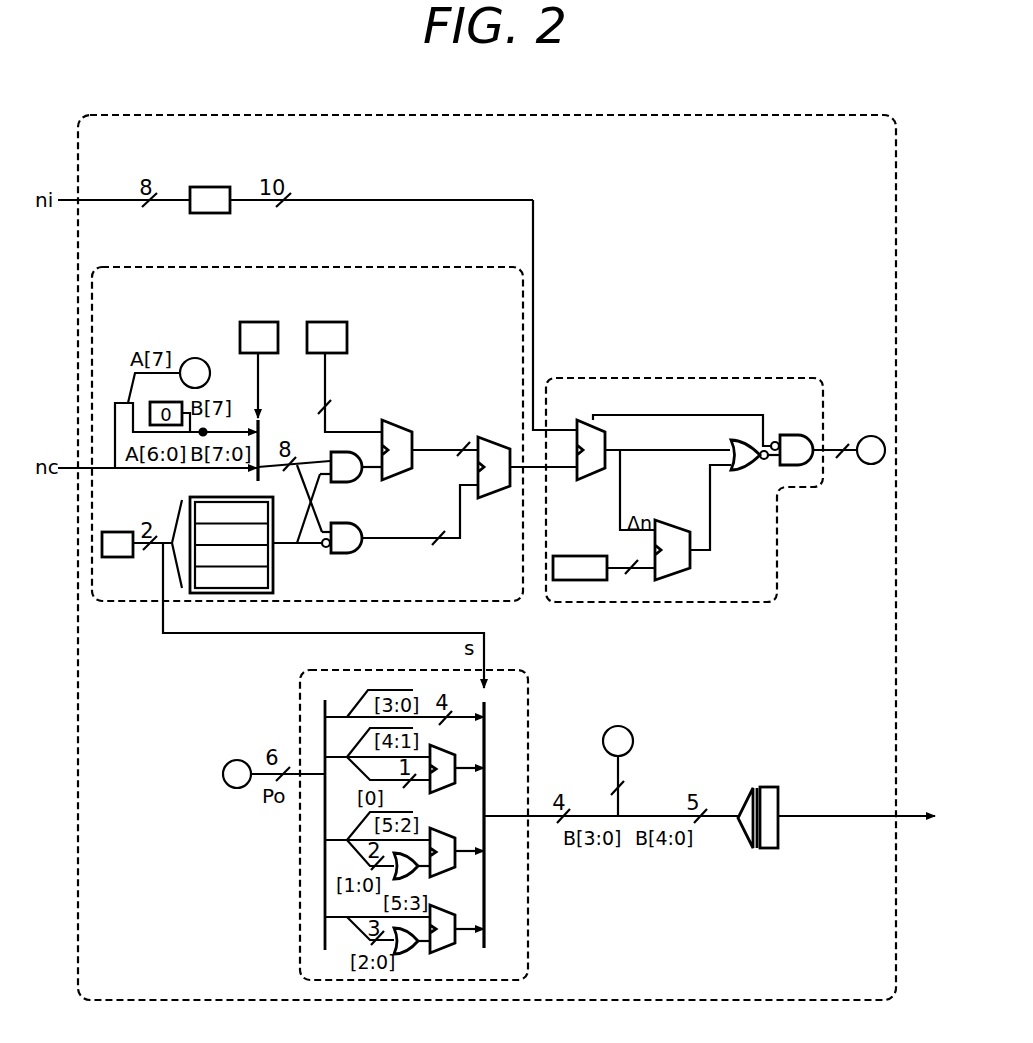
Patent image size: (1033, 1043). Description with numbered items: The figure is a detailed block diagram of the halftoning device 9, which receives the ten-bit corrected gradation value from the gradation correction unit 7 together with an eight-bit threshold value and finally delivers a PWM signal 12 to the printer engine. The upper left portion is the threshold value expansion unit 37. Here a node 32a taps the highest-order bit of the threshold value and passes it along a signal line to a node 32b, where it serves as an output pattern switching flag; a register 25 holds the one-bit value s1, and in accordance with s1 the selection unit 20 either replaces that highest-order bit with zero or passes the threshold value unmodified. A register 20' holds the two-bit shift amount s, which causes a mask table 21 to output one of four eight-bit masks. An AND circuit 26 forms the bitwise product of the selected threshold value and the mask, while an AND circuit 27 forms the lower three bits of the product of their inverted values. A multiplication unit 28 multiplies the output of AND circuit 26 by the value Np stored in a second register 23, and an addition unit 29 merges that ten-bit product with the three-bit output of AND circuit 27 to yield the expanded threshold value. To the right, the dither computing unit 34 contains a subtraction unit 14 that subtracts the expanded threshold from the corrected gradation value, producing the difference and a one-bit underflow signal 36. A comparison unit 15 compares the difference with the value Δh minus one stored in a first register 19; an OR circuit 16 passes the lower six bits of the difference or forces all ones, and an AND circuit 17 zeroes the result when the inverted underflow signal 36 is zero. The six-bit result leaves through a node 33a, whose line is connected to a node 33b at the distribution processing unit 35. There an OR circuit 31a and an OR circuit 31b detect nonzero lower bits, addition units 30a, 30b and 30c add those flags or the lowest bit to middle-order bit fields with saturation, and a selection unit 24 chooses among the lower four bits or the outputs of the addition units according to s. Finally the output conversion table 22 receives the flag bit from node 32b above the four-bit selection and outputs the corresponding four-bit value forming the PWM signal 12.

The halftoning device 9 is at (667, 113).
The gradation correction unit 7 is at (217, 187).
The threshold value expansion unit 37 is at (417, 267).
The node 32a is at (197, 358).
The register 25 is at (265, 322).
The second register 23 is at (337, 322).
The selection unit 20 is at (279, 436).
The multiplication unit 28 is at (391, 420).
The addition unit 29 is at (495, 437).
The dither computing unit 34 is at (760, 378).
The underflow signal 36 is at (740, 412).
The AND circuit 17 is at (791, 432).
The node 33a is at (870, 464).
The subtraction unit 14 is at (597, 480).
The OR circuit 16 is at (741, 470).
The AND circuit 26 is at (350, 483).
The AND circuit 27 is at (347, 553).
The register 20' is at (120, 522).
The mask table 21 is at (246, 593).
The first register 19 is at (583, 580).
The comparison unit 15 is at (674, 580).
The distribution processing unit 35 is at (300, 878).
The node 33b is at (227, 764).
The selection unit 24 is at (484, 702).
The addition unit 30a is at (455, 948).
The addition unit 30b is at (455, 860).
The addition unit 30c is at (455, 745).
The OR circuit 31a is at (416, 952).
The OR circuit 31b is at (416, 877).
The node 32b is at (633, 738).
The output conversion table 22 is at (768, 787).
The PWM signal 12 is at (848, 815).